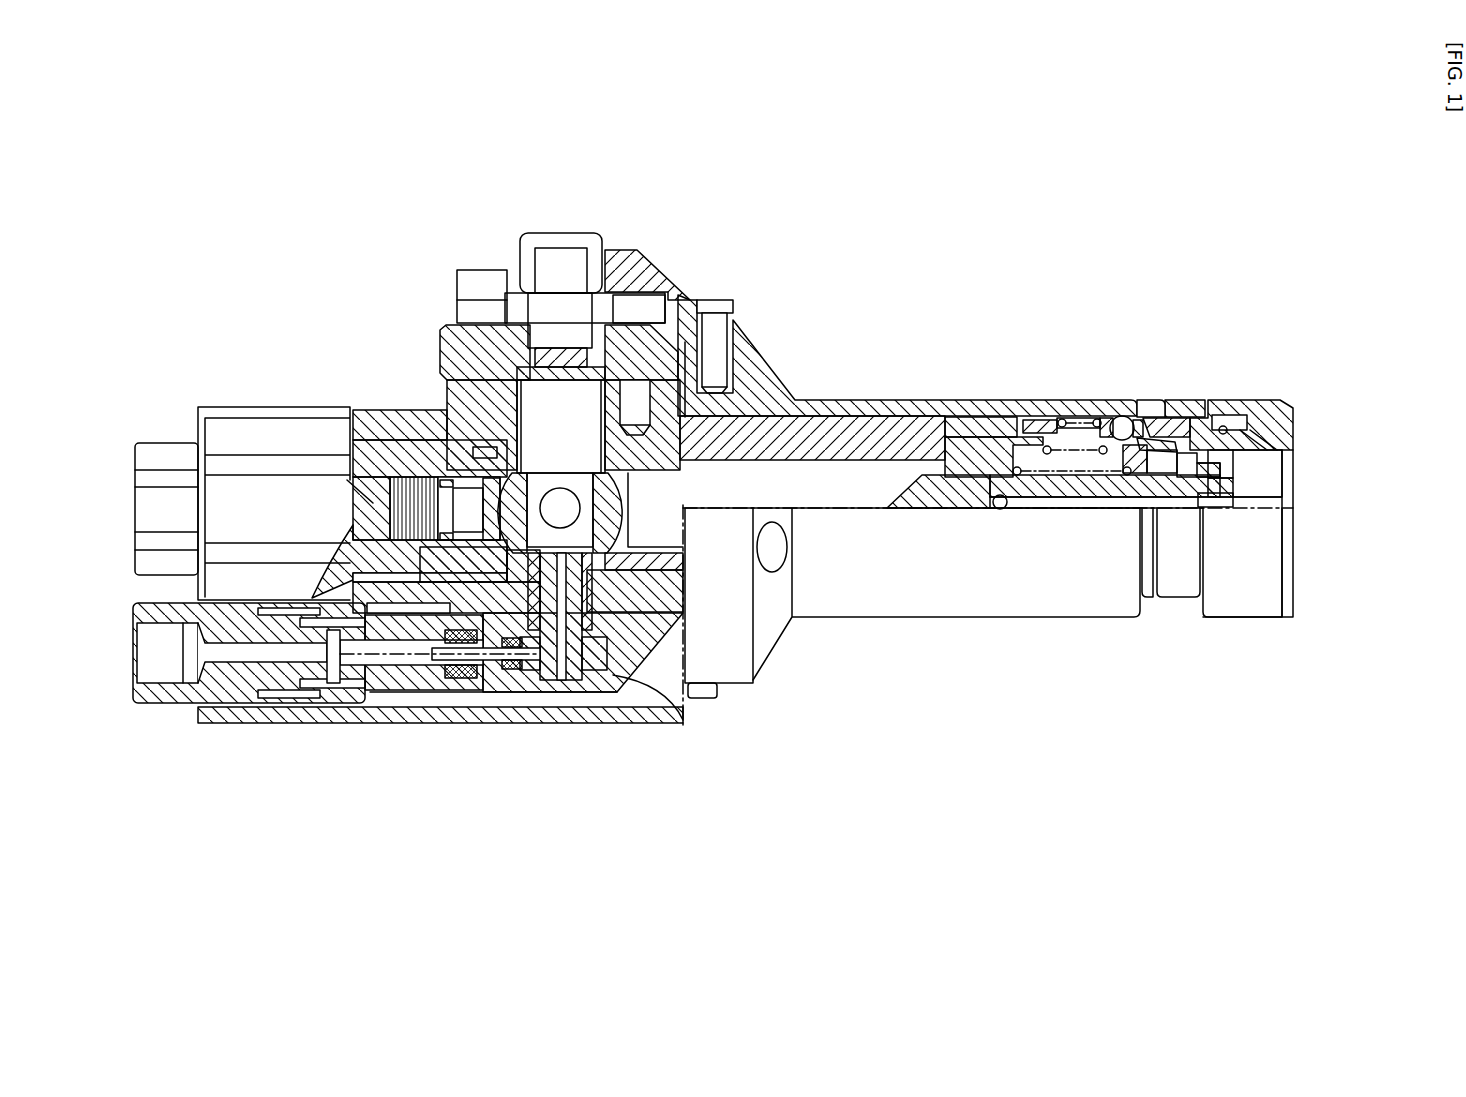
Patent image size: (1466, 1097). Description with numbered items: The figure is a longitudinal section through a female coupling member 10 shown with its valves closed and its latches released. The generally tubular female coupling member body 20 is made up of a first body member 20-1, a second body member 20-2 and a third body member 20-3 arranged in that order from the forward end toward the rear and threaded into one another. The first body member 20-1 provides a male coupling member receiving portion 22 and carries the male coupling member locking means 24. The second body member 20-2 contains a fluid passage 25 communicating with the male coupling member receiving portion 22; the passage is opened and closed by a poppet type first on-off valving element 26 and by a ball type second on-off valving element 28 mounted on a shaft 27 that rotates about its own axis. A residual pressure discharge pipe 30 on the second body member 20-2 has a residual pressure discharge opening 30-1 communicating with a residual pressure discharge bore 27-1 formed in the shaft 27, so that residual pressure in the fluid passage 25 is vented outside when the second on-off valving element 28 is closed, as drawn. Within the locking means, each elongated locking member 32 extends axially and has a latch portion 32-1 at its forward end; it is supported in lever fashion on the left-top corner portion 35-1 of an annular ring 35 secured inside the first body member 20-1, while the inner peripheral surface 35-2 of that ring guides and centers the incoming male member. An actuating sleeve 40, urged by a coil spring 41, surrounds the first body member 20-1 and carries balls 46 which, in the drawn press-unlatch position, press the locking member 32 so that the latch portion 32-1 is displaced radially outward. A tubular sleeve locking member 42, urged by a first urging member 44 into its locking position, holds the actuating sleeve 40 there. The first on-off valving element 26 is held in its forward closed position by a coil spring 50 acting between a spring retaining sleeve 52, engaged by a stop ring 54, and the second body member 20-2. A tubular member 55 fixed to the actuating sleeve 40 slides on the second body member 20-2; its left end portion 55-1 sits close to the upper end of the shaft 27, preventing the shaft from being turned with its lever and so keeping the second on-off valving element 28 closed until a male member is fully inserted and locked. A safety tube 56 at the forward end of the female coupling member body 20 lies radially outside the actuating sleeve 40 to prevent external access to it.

The female coupling member 10 is at (868, 212).
The female coupling member body 20 is at (886, 399).
The first body member 20-1 is at (988, 427).
The second body member 20-2 is at (822, 440).
The third body member 20-3 is at (378, 467).
The male coupling member receiving portion 22 is at (1263, 485).
The male coupling member locking means 24 is at (1178, 334).
The fluid passage 25 is at (350, 500).
The first on-off valving element 26 is at (945, 520).
The shaft 27 is at (567, 305).
The residual pressure discharge bore 27-1 is at (560, 647).
The second on-off valving element 28 is at (639, 528).
The residual pressure discharge pipe 30 is at (578, 742).
The residual pressure discharge opening 30-1 is at (413, 653).
The locking member 32 is at (1194, 413).
The latch portion 32-1 is at (1237, 447).
The annular ring 35 is at (1150, 447).
The left-top corner portion 35-1 is at (1165, 450).
The inner peripheral surface 35-2 is at (1155, 445).
The actuating sleeve 40 is at (1160, 420).
The coil spring 41 is at (1085, 400).
The sleeve locking member 42 is at (1126, 416).
The first urging member 44 is at (1030, 412).
The balls 46 is at (1080, 425).
The coil spring 50 is at (1080, 470).
The spring retaining sleeve 52 is at (1177, 512).
The stop ring 54 is at (1213, 500).
The tubular member 55 is at (928, 402).
The left end portion 55-1 is at (648, 265).
The safety tube 56 is at (1293, 427).